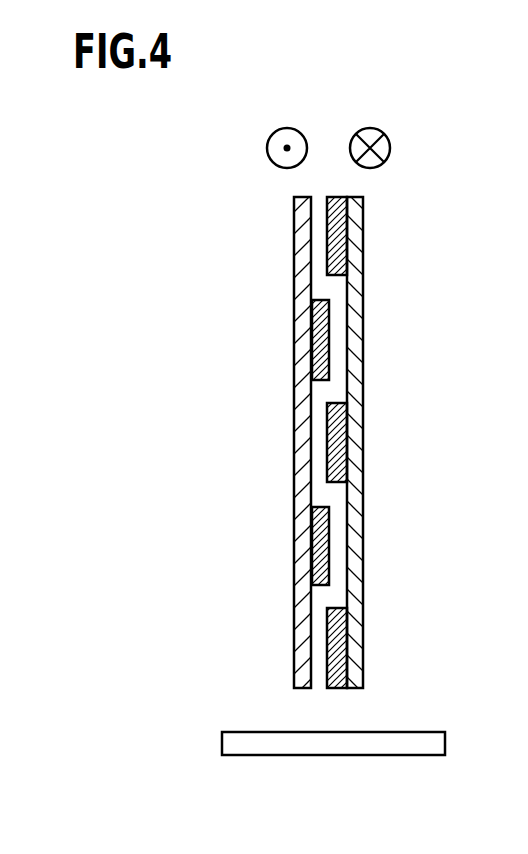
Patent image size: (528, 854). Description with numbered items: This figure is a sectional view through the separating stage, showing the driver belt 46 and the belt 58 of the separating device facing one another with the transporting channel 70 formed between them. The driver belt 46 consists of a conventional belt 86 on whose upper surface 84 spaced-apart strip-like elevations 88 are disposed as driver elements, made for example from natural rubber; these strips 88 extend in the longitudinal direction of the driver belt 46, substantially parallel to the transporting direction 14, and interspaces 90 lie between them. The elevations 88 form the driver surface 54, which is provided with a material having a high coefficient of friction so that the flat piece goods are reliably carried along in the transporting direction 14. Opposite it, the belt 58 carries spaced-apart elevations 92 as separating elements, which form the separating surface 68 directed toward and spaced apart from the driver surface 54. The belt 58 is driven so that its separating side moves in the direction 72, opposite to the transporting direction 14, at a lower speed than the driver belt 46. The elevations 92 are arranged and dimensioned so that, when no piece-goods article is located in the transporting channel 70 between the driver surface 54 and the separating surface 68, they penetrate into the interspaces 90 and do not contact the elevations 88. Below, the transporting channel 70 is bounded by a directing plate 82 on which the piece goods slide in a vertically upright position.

The transporting direction 14 is at (383, 150).
The driver belt 46 is at (412, 237).
The driver surface 54 is at (327, 236).
The belt 58 is at (257, 382).
The separating surface 68 is at (329, 320).
The transporting channel 70 is at (354, 492).
The direction 72 is at (277, 142).
The directing plate 82 is at (368, 743).
The upper surface 84 is at (347, 595).
The conventional belt 86 is at (353, 362).
The strip-like elevations 88 is at (345, 657).
The interspaces 90 is at (353, 550).
The elevations 92 is at (313, 540).